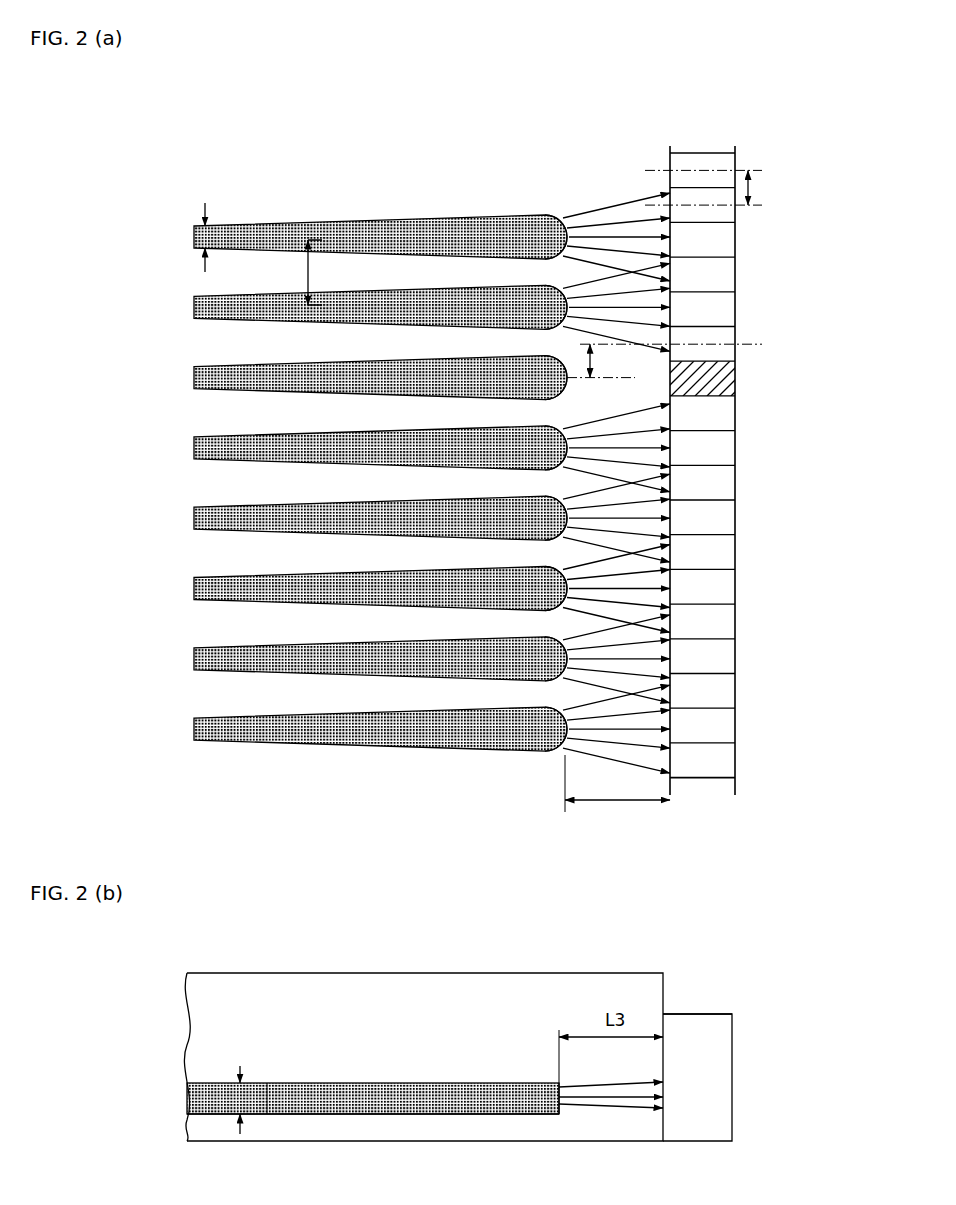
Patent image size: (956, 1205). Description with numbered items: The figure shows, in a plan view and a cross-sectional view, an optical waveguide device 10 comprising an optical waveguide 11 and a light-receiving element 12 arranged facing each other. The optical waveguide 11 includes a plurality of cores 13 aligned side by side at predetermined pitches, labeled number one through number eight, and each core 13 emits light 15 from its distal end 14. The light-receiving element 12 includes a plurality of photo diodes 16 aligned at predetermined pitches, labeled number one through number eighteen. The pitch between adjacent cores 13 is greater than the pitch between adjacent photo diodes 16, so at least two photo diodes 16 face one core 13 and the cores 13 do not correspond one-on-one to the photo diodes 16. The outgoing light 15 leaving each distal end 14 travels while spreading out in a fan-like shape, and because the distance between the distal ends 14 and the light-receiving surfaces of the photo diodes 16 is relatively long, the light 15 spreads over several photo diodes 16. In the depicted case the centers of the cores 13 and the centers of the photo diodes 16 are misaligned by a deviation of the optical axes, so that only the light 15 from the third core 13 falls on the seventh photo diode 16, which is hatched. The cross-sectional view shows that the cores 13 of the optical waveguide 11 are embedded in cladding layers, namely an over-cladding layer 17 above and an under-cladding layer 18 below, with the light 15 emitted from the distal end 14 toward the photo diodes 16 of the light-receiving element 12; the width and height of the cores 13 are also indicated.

In FIG. 2a, the optical waveguide device 10 is at (622, 132).
In FIG. 2a, the optical waveguide 11 is at (408, 782).
In FIG. 2b, the optical waveguide 11 is at (663, 1146).
In FIG. 2a, the light-receiving element 12 is at (702, 796).
In FIG. 2b, the light-receiving element 12 is at (713, 1073).
In FIG. 2a, the core 13 is at (371, 221).
In FIG. 2b, the core 13 is at (215, 1097).
In FIG. 2a, the distal end 14 is at (541, 232).
In FIG. 2b, the distal end 14 is at (545, 1100).
In FIG. 2a, the light 15 is at (607, 207).
In FIG. 2b, the light 15 is at (607, 1086).
In FIG. 2a, the photo diode 16 is at (704, 151).
In FIG. 2b, the photo diode 16 is at (734, 1013).
In FIG. 2b, the over-cladding layer 17 is at (213, 1028).
In FIG. 2b, the under-cladding layer 18 is at (205, 1127).